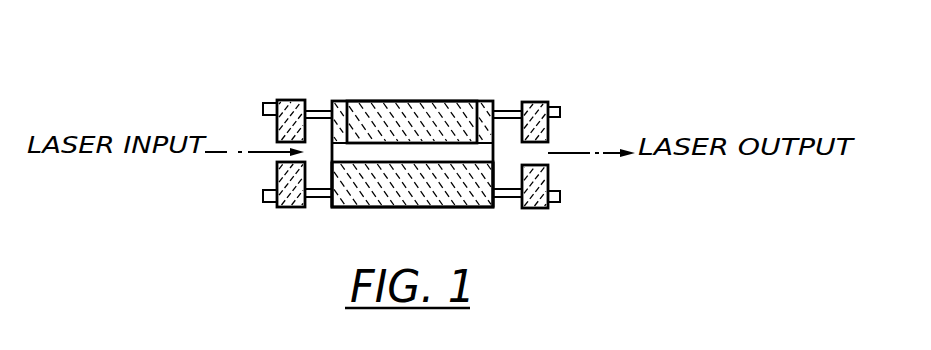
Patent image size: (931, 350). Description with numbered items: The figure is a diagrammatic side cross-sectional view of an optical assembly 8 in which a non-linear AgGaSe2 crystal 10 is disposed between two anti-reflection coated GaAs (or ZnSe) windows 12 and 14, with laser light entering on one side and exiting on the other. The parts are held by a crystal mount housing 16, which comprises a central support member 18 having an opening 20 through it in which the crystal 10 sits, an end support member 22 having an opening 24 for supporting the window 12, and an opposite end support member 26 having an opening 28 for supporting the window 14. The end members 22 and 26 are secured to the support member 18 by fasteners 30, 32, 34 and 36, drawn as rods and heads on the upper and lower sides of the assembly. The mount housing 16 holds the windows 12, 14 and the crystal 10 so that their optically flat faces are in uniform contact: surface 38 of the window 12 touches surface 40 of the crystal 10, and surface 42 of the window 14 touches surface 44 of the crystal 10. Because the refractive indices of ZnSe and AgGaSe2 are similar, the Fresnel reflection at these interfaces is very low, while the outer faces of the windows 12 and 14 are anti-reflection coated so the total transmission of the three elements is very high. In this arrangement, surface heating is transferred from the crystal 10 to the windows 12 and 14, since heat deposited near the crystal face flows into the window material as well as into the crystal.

The optical assembly 8 is at (510, 43).
The non-linear AgGaSe2 crystal 10 is at (412, 155).
The window 12 is at (313, 100).
The window 14 is at (518, 100).
The crystal mount housing 16 is at (395, 100).
The support member 18 is at (490, 100).
The opening 20 is at (392, 157).
The end support member 22 is at (290, 100).
The opening 24 is at (280, 156).
The end support member 26 is at (540, 102).
The opening 28 is at (548, 160).
The fastener 30 is at (263, 107).
The fastener 32 is at (560, 110).
The fastener 34 is at (265, 203).
The fastener 36 is at (560, 200).
The surface of window 12 38 is at (350, 100).
The surface of crystal 10 40 is at (330, 160).
The surface of window 14 42 is at (478, 100).
The surface of crystal 10 44 is at (497, 160).